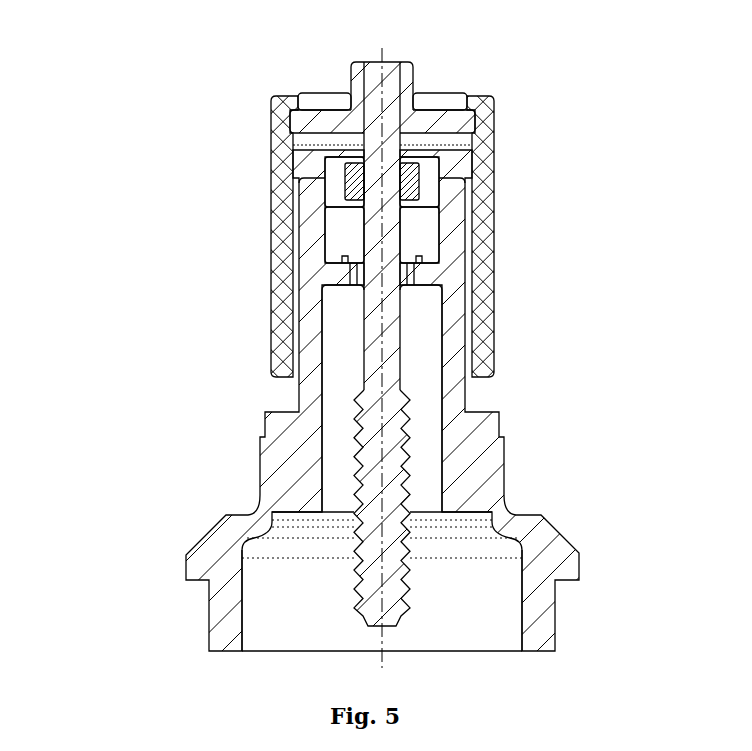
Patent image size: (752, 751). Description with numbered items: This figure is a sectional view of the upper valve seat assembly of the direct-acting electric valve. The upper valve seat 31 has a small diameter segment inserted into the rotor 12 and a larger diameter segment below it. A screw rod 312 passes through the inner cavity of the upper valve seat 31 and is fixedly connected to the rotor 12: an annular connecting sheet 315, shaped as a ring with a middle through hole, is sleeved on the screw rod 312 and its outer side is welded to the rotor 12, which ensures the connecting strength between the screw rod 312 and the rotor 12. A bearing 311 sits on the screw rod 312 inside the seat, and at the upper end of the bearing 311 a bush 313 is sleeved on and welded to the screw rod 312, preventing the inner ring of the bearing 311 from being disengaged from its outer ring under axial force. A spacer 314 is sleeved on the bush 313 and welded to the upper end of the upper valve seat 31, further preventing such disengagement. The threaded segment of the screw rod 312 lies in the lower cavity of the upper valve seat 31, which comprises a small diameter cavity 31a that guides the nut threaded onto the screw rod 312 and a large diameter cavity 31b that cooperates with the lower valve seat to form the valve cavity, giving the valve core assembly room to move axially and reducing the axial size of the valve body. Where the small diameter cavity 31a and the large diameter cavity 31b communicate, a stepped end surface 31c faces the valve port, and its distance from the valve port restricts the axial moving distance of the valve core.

The rotor 12 is at (492, 323).
The upper valve seat 31 is at (480, 500).
The bearing 311 is at (425, 250).
The screw rod 312 is at (392, 433).
The bush 313 is at (470, 145).
The spacer 314 is at (432, 193).
The annular connecting sheet 315 is at (403, 98).
The small diameter cavity 31a is at (340, 403).
The large diameter cavity 31b is at (285, 599).
The stepped end surface 31c is at (287, 512).